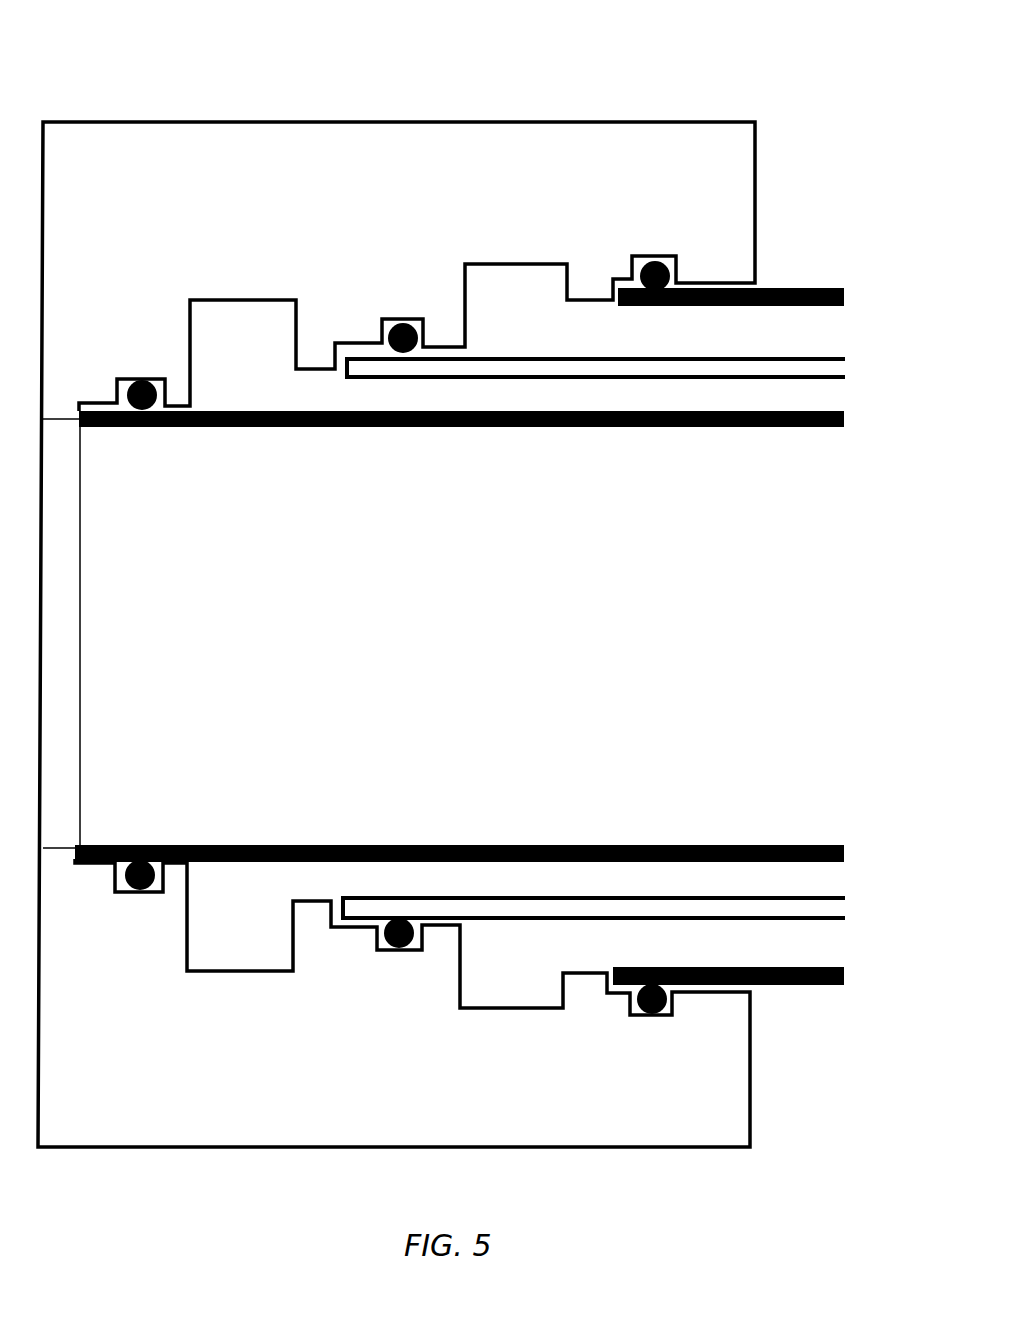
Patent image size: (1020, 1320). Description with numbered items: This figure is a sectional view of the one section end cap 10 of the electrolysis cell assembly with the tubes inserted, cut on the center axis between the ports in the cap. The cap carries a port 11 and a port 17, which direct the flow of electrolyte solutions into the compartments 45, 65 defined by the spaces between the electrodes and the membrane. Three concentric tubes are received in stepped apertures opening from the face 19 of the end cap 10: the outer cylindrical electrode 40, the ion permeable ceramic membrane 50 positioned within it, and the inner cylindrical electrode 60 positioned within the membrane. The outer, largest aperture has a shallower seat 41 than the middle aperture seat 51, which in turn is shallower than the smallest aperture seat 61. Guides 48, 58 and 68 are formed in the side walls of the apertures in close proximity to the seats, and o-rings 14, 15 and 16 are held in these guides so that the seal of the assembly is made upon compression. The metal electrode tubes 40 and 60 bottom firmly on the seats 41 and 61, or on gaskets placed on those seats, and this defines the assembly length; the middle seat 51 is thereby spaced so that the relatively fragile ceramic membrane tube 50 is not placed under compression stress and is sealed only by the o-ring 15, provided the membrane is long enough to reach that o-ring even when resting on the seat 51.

The one section end cap 10 is at (414, 93).
The face 19 is at (757, 202).
The cylindrical electrode 40 is at (846, 297).
The compartment 45 is at (768, 335).
The ion permeable ceramic membrane 50 is at (768, 369).
The compartment 65 is at (768, 395).
The cylindrical electrode 60 is at (846, 423).
The aperture seat 61 is at (76, 862).
The guide 68 is at (119, 882).
The o-ring 16 is at (141, 890).
The port 17 is at (240, 942).
The aperture seat 51 is at (332, 927).
The guide 58 is at (380, 943).
The o-ring 15 is at (398, 948).
The port 11 is at (515, 990).
The aperture seat 41 is at (608, 993).
The o-ring 14 is at (651, 1014).
The guide 48 is at (670, 1013).